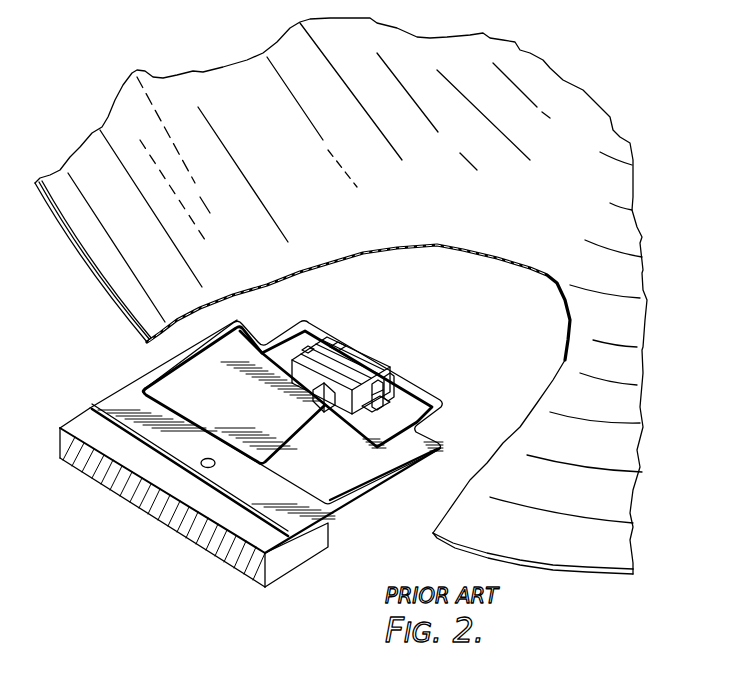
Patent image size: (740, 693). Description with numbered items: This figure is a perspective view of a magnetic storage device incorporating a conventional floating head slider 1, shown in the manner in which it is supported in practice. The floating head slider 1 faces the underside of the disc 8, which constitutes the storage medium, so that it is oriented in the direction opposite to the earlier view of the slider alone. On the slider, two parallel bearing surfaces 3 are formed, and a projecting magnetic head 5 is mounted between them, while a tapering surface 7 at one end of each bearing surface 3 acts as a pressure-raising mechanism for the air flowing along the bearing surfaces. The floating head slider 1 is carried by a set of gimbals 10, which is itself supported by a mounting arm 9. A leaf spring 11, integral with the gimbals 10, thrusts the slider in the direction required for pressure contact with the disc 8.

The floating head slider 1 is at (364, 352).
The bearing surface 3 is at (386, 367).
The projecting magnetic head 5 is at (391, 406).
The tapering surface 7 is at (304, 355).
The disc 8 is at (112, 278).
The mounting arm 9 is at (303, 553).
The gimbals 10 is at (398, 478).
The leaf spring 11 is at (270, 431).